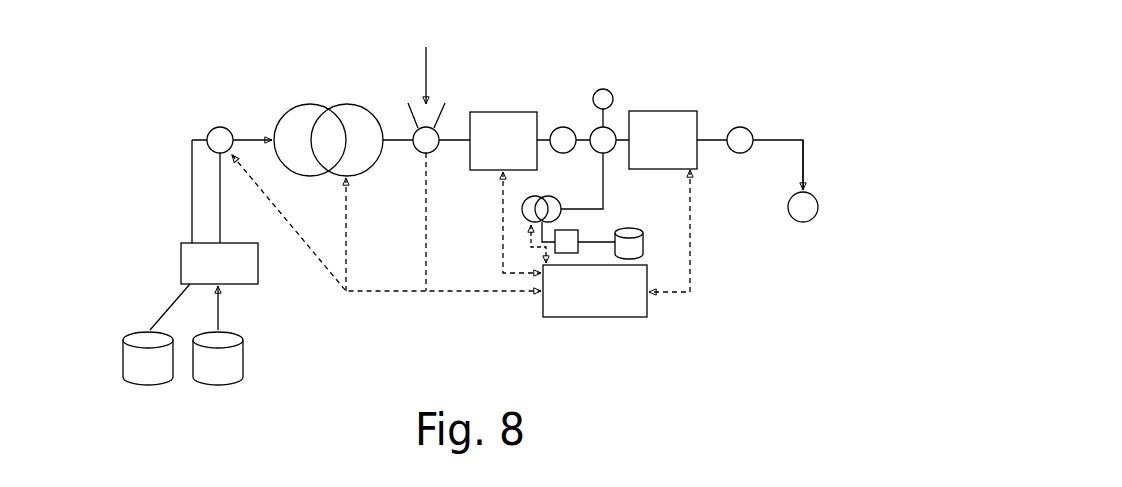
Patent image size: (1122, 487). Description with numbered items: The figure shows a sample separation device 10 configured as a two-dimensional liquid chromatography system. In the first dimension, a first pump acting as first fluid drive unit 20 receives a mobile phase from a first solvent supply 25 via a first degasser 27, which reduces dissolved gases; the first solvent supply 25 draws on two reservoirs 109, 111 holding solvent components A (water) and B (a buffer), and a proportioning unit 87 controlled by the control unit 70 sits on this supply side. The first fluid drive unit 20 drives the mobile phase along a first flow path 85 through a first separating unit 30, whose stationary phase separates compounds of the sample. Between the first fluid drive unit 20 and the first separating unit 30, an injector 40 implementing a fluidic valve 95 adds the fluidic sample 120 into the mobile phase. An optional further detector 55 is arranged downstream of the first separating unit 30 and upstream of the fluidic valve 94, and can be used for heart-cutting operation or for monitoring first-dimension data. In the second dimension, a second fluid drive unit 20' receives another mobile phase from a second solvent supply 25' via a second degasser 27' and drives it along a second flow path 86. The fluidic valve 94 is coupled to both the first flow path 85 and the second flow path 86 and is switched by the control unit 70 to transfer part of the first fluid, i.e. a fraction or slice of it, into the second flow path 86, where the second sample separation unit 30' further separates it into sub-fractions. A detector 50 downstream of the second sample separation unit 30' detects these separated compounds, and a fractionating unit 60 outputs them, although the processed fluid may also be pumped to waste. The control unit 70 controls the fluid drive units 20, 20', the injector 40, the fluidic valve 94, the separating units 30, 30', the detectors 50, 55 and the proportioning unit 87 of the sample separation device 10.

The sample separation device 10 is at (676, 314).
The first fluid drive unit 20 is at (328, 105).
The second fluid drive unit 20' is at (502, 229).
The first solvent supply 25 is at (142, 384).
The second solvent supply 25' is at (646, 215).
The first degasser 27 is at (233, 297).
The second degasser 27' is at (596, 220).
The first separating unit 30 is at (506, 101).
The second sample separation unit 30' is at (675, 97).
The injector 40 is at (440, 108).
The detector 50 is at (740, 128).
The further detector 55 is at (541, 133).
The fractionating unit 60 is at (608, 91).
The control unit 70 is at (578, 318).
The first flow path 85 is at (398, 137).
The second flow path 86 is at (619, 147).
The proportioning unit 87 is at (219, 128).
The fluidic valve 94 is at (600, 148).
The fluidic valve 95 is at (413, 153).
The reservoir 109 is at (147, 388).
The reservoir 111 is at (220, 388).
The fluidic sample 120 is at (424, 76).